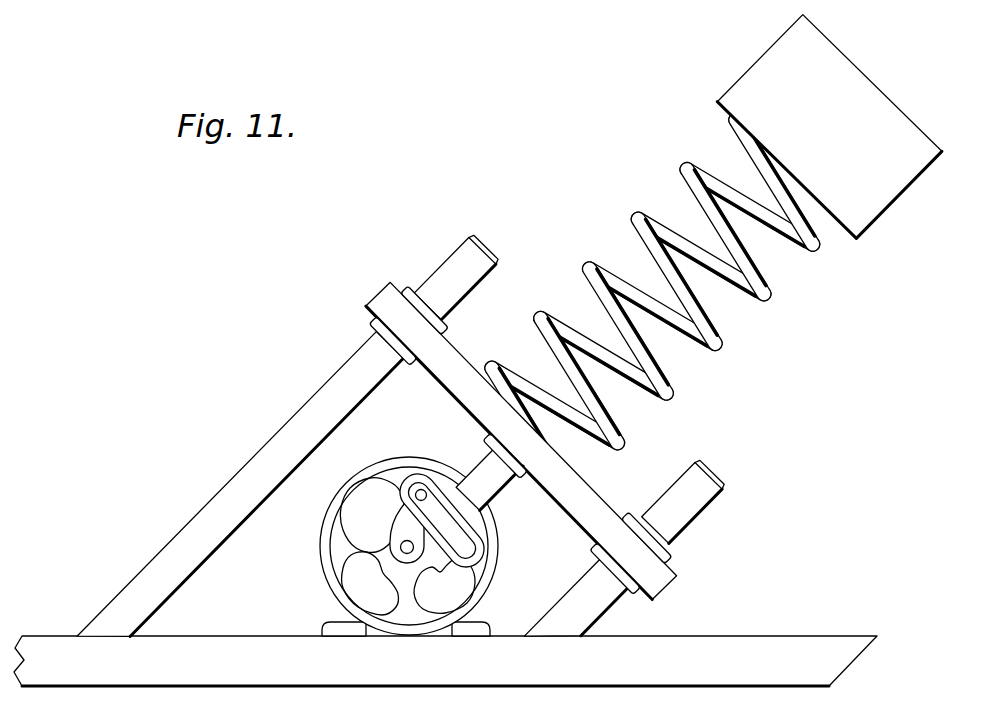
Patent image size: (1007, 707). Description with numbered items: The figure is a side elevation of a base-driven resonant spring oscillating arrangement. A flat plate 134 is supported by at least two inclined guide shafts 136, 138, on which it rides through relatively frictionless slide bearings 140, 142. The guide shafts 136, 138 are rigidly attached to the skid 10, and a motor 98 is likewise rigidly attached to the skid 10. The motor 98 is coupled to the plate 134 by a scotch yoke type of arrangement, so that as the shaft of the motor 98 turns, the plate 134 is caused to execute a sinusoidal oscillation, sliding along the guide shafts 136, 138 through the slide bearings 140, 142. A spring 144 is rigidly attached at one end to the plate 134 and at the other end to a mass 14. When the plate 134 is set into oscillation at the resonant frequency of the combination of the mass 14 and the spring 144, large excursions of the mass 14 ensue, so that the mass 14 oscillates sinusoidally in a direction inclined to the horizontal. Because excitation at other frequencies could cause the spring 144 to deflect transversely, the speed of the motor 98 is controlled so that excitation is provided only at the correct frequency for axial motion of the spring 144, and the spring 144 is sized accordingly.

The skid 10 is at (781, 644).
The mass 14 is at (782, 45).
The motor 98 is at (328, 554).
The flat plate 134 is at (601, 494).
The inclined guide shaft 136 is at (302, 411).
The inclined guide shaft 138 is at (704, 500).
The slide bearing 140 is at (423, 307).
The slide bearing 142 is at (668, 556).
The spring 144 is at (766, 298).